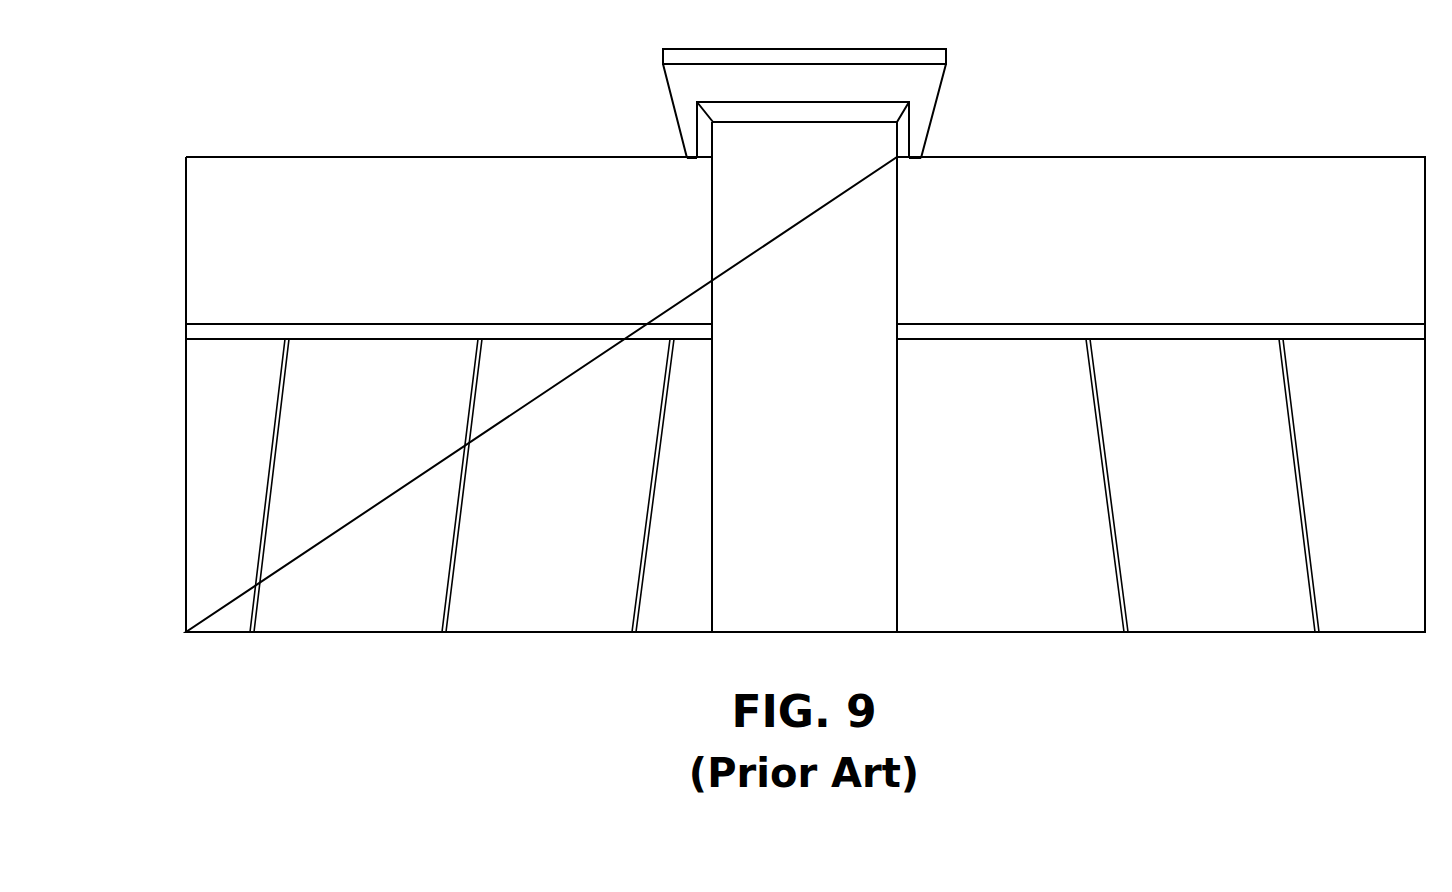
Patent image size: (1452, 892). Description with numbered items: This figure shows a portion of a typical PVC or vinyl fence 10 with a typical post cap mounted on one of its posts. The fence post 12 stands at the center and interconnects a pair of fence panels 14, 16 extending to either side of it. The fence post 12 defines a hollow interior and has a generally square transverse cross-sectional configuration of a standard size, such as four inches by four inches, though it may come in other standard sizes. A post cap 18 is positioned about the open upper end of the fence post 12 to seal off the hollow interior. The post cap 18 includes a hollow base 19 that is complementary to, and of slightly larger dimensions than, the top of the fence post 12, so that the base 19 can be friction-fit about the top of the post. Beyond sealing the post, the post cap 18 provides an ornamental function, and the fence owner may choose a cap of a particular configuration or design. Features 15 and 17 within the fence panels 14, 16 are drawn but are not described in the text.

The fence 10 is at (974, 98).
The fence post 12 is at (731, 217).
The fence panel 14 is at (211, 220).
The source contact features 15 is at (528, 307).
The fence panel 16 is at (970, 176).
The drain contact features 17 is at (990, 307).
The post cap 18 is at (788, 47).
The hollow base 19 is at (876, 115).